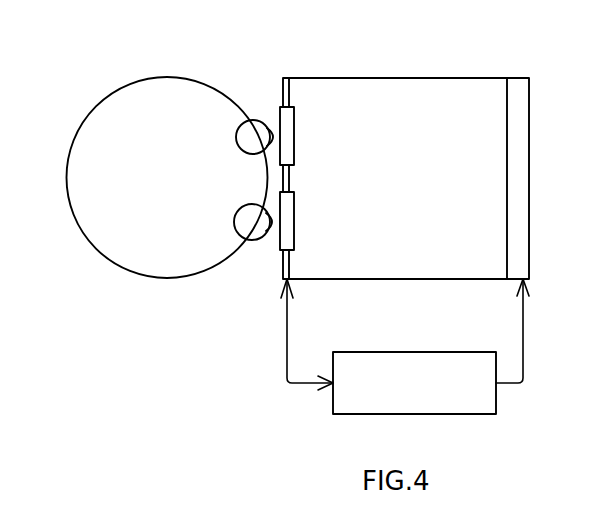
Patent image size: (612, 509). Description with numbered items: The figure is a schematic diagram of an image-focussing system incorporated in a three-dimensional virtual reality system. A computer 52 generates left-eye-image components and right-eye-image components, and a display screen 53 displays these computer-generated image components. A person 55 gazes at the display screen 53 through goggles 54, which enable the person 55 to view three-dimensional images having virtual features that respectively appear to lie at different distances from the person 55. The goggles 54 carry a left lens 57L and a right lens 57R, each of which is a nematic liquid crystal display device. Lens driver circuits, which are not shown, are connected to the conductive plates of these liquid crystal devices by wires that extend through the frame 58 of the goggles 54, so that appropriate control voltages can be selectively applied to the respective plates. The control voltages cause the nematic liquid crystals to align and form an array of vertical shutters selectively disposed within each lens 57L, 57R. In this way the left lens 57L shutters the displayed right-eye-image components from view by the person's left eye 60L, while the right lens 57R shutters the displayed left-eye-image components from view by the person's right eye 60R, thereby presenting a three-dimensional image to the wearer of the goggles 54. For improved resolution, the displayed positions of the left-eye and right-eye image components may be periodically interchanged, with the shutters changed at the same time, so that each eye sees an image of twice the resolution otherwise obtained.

The computer 52 is at (496, 414).
The display screen 53 is at (507, 110).
The goggles 54 is at (297, 250).
The person 55 is at (105, 99).
The left lens 57L is at (295, 131).
The right lens 57R is at (295, 216).
The frame 58 is at (283, 83).
The left eye 60L is at (236, 138).
The right eye 60R is at (234, 228).